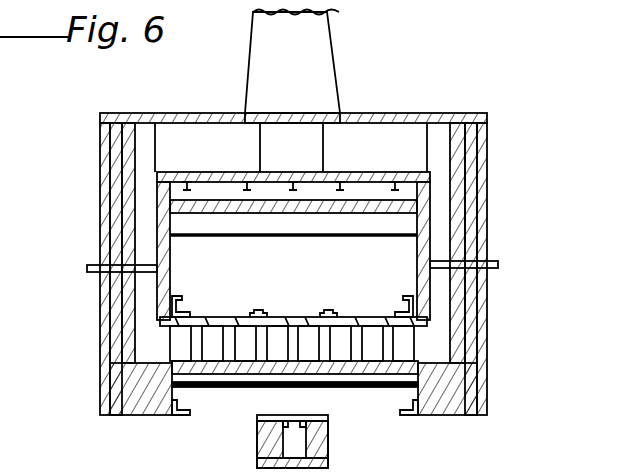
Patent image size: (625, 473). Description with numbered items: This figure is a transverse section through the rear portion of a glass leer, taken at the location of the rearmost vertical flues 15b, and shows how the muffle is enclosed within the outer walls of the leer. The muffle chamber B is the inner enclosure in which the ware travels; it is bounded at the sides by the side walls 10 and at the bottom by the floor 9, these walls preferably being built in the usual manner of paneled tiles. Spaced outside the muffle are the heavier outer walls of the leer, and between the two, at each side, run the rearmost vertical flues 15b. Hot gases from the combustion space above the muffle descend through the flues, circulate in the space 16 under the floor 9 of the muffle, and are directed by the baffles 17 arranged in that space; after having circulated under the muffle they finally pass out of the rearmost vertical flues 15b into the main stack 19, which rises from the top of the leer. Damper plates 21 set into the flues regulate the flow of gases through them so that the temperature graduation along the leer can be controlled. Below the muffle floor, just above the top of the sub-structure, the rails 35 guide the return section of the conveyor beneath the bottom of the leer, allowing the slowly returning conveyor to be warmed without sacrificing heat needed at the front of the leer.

The main stack 19 is at (292, 67).
The rearmost vertical flues 15b is at (140, 176).
The damper plates 21 is at (87, 268).
The side walls 10 is at (168, 263).
The heating chamber B is at (293, 277).
The rails 35 is at (184, 307).
The floor 9 is at (222, 318).
The space 16 is at (305, 342).
The baffles 17 is at (263, 353).